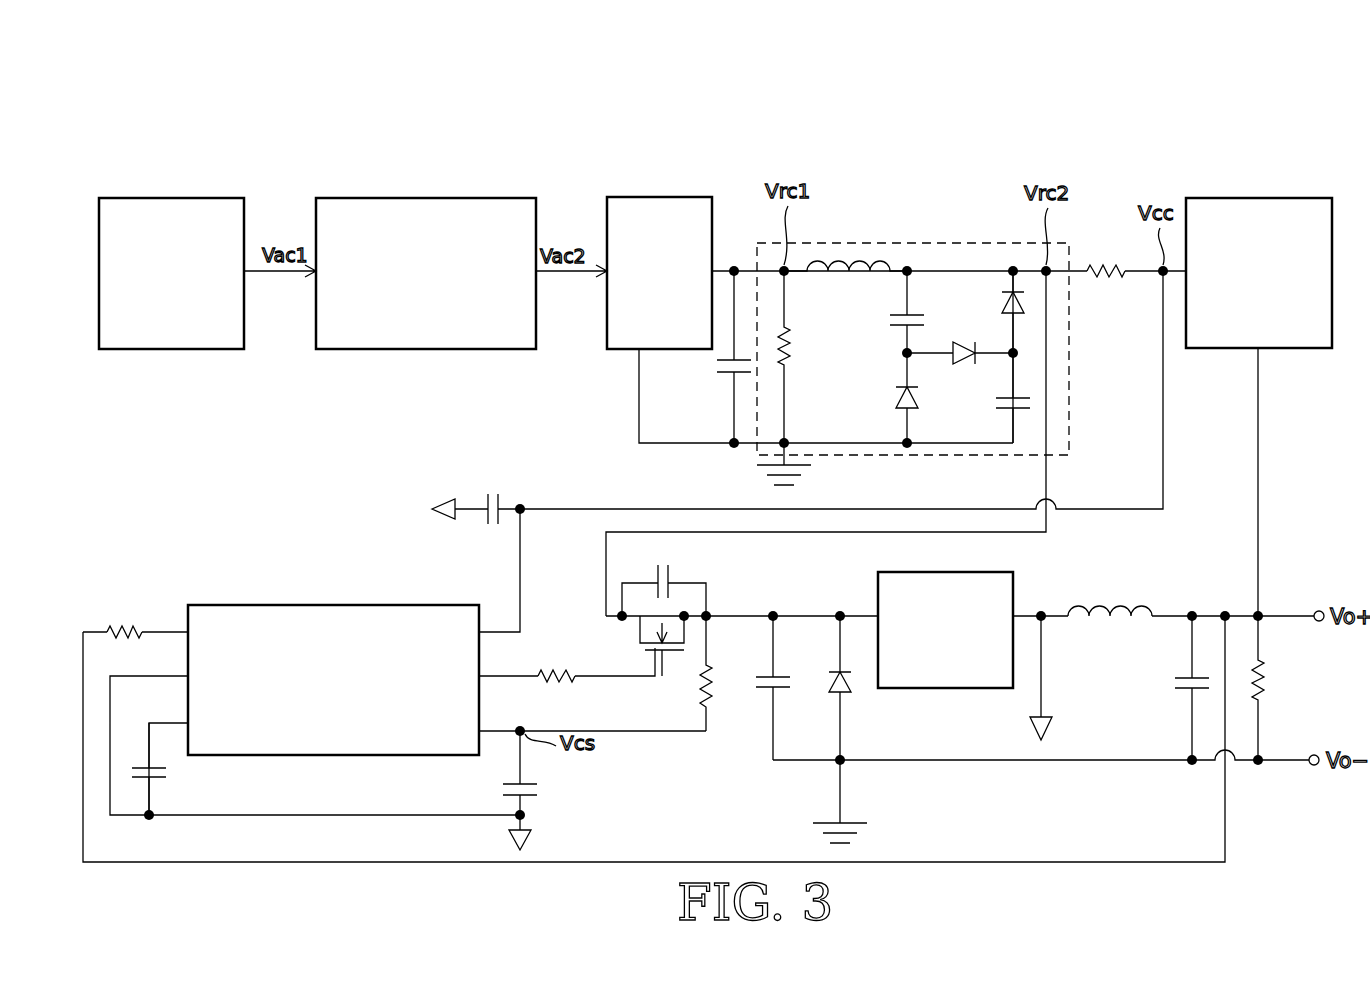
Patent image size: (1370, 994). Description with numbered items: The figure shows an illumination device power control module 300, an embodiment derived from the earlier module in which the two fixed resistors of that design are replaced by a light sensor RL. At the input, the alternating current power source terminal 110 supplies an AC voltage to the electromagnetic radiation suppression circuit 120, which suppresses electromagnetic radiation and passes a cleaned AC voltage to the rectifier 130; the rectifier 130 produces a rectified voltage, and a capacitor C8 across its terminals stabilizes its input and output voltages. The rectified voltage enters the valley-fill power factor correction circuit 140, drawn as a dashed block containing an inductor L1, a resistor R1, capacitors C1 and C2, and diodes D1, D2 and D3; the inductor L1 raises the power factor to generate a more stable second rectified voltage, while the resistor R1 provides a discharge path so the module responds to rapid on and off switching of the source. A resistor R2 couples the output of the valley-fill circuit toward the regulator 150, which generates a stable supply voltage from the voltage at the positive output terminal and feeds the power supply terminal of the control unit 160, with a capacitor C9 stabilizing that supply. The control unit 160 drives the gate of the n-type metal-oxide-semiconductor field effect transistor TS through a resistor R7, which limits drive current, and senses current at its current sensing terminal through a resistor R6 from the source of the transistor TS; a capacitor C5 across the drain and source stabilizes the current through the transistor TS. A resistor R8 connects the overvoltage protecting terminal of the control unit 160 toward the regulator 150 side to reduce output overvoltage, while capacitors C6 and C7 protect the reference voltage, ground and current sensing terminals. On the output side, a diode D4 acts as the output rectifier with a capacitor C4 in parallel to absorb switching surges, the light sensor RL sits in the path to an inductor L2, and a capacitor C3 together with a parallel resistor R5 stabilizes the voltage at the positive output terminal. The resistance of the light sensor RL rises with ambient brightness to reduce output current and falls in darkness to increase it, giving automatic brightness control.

The alternating current power source terminal 110 is at (172, 198).
The electromagnetic radiation suppression circuit 120 is at (407, 198).
The rectifier 130 is at (649, 197).
The valley-fill power factor correction circuit 140 is at (913, 243).
The regulator 150 is at (1282, 198).
The control unit 160 is at (367, 605).
The illumination device power control module 300 is at (1200, 112).
The inductor L1 is at (848, 262).
The inductor L2 is at (1110, 622).
The resistor R1 is at (792, 346).
The resistor R2 is at (1100, 265).
The resistor R5 is at (1265, 680).
The resistor R6 is at (703, 694).
The resistor R7 is at (556, 668).
The resistor R8 is at (125, 626).
The capacitor C1 is at (895, 316).
The capacitor C2 is at (999, 406).
The capacitor C3 is at (1176, 684).
The capacitor C4 is at (757, 682).
The capacitor C5 is at (664, 557).
The capacitor C6 is at (168, 773).
The capacitor C7 is at (538, 786).
The capacitor C8 is at (722, 366).
The capacitor C9 is at (497, 490).
The diode D1 is at (895, 398).
The diode D2 is at (968, 365).
The diode D3 is at (1002, 302).
The diode D4 is at (851, 692).
The n-type metal-oxide-semiconductor field effect transistor TS is at (642, 650).
The light sensor RL is at (1016, 587).